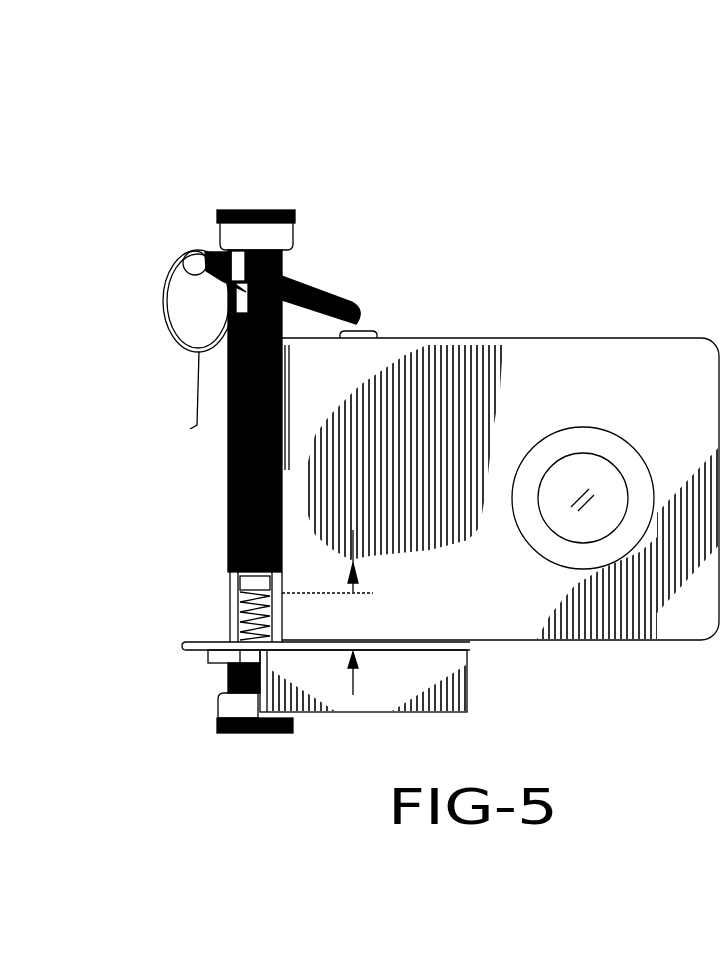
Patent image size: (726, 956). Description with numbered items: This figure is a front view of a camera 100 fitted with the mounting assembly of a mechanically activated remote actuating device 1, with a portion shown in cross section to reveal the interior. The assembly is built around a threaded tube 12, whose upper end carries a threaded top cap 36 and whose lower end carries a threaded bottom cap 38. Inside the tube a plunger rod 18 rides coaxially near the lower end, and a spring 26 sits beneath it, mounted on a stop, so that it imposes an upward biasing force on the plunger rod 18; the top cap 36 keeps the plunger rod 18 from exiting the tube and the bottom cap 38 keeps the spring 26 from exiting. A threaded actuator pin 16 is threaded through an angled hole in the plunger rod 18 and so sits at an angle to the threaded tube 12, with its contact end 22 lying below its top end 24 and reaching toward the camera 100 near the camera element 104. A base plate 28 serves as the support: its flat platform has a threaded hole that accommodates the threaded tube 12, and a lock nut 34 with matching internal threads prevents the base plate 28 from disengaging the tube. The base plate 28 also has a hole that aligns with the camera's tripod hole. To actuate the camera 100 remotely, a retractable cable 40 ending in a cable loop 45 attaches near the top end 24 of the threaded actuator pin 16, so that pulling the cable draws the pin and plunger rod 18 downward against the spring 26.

The mechanically activated remote actuating device 1 is at (588, 197).
The threaded tube 12 is at (228, 457).
The threaded actuator pin 16 is at (302, 286).
The plunger rod 18 is at (245, 583).
The contact end 22 is at (358, 310).
The top end 24 is at (200, 252).
The spring 26 is at (240, 607).
The base plate 28 is at (470, 688).
The lock nut 34 is at (208, 663).
The top cap 36 is at (255, 212).
The bottom cap 38 is at (240, 734).
The retractable cable 40 is at (197, 394).
The cable loop 45 is at (165, 303).
The camera 100 is at (588, 338).
The shutter button 104 is at (375, 331).